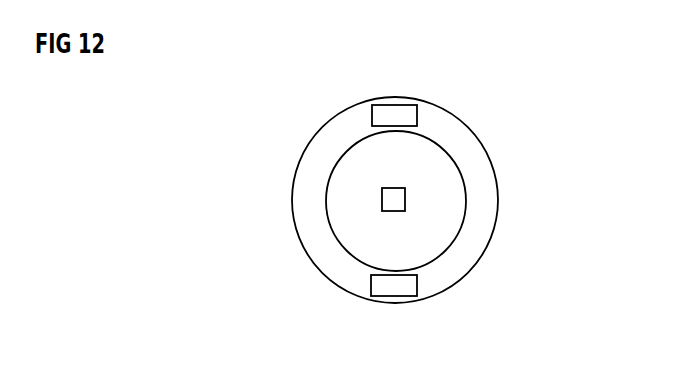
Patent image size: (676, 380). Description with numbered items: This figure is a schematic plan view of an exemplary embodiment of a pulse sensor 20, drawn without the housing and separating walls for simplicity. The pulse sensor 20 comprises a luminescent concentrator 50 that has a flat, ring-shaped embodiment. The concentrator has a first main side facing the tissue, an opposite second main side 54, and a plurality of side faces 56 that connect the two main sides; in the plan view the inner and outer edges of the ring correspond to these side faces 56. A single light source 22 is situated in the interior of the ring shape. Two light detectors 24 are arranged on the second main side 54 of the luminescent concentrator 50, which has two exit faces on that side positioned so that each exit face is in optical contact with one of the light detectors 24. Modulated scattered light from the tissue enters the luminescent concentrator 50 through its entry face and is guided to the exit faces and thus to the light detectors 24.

The pulse sensor 20 is at (354, 203).
The light source 22 is at (407, 200).
The light detectors 24 is at (395, 105).
The luminescent concentrator 50 is at (388, 203).
The second main side 54 is at (330, 258).
The side face 56 is at (478, 137).